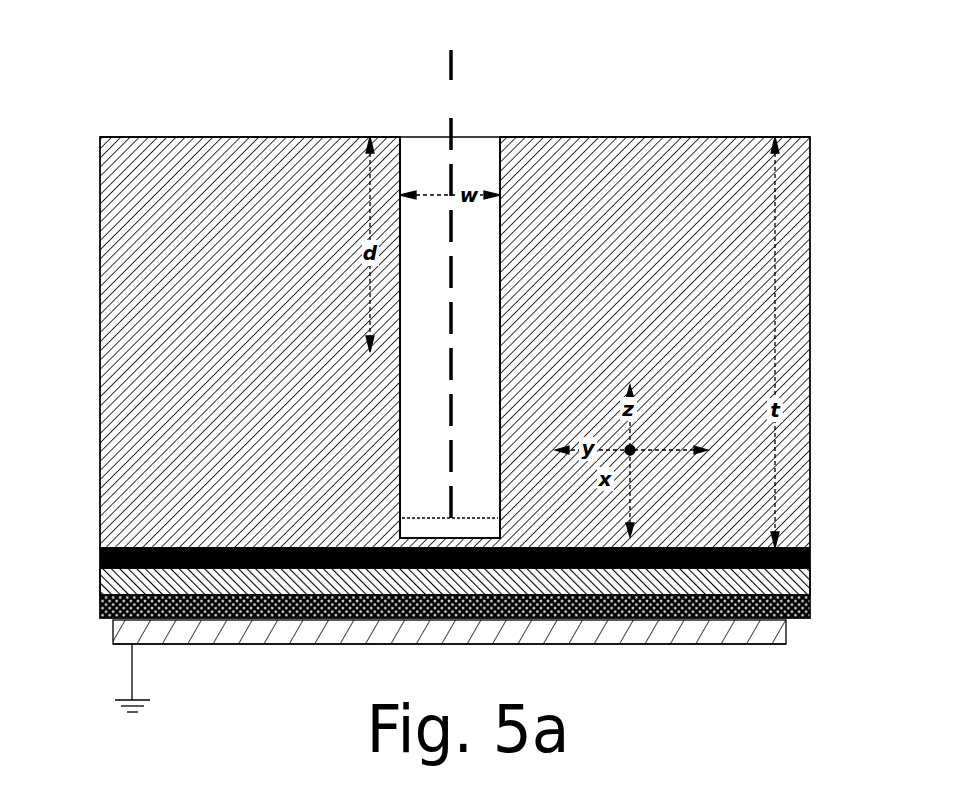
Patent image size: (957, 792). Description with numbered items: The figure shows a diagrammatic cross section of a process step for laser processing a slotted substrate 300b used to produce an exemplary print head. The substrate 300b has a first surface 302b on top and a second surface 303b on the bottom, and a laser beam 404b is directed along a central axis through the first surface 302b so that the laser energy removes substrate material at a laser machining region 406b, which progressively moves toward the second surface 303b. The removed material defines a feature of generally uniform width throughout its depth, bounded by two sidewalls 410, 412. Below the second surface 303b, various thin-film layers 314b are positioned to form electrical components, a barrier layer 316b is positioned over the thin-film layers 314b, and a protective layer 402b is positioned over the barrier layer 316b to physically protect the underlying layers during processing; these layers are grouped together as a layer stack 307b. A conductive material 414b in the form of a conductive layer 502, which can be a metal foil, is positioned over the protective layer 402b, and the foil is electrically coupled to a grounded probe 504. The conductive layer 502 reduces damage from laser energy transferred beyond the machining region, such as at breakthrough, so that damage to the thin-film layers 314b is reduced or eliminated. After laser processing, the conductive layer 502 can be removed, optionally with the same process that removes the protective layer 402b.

The substrate 300b is at (192, 278).
The first surface 302b is at (688, 134).
The second surface 303b is at (601, 566).
The layer stack 307b is at (813, 553).
The thin-film layers 314b is at (100, 552).
The barrier layer 316b is at (100, 579).
The protective layer 402b is at (100, 603).
The laser beam 404b is at (451, 288).
The trench 406b is at (505, 343).
The sidewall 410 is at (400, 258).
The sidewall 412 is at (500, 296).
The conductive material 414b is at (291, 650).
The conductive layer 502 is at (113, 633).
The grounded probe 504 is at (132, 676).